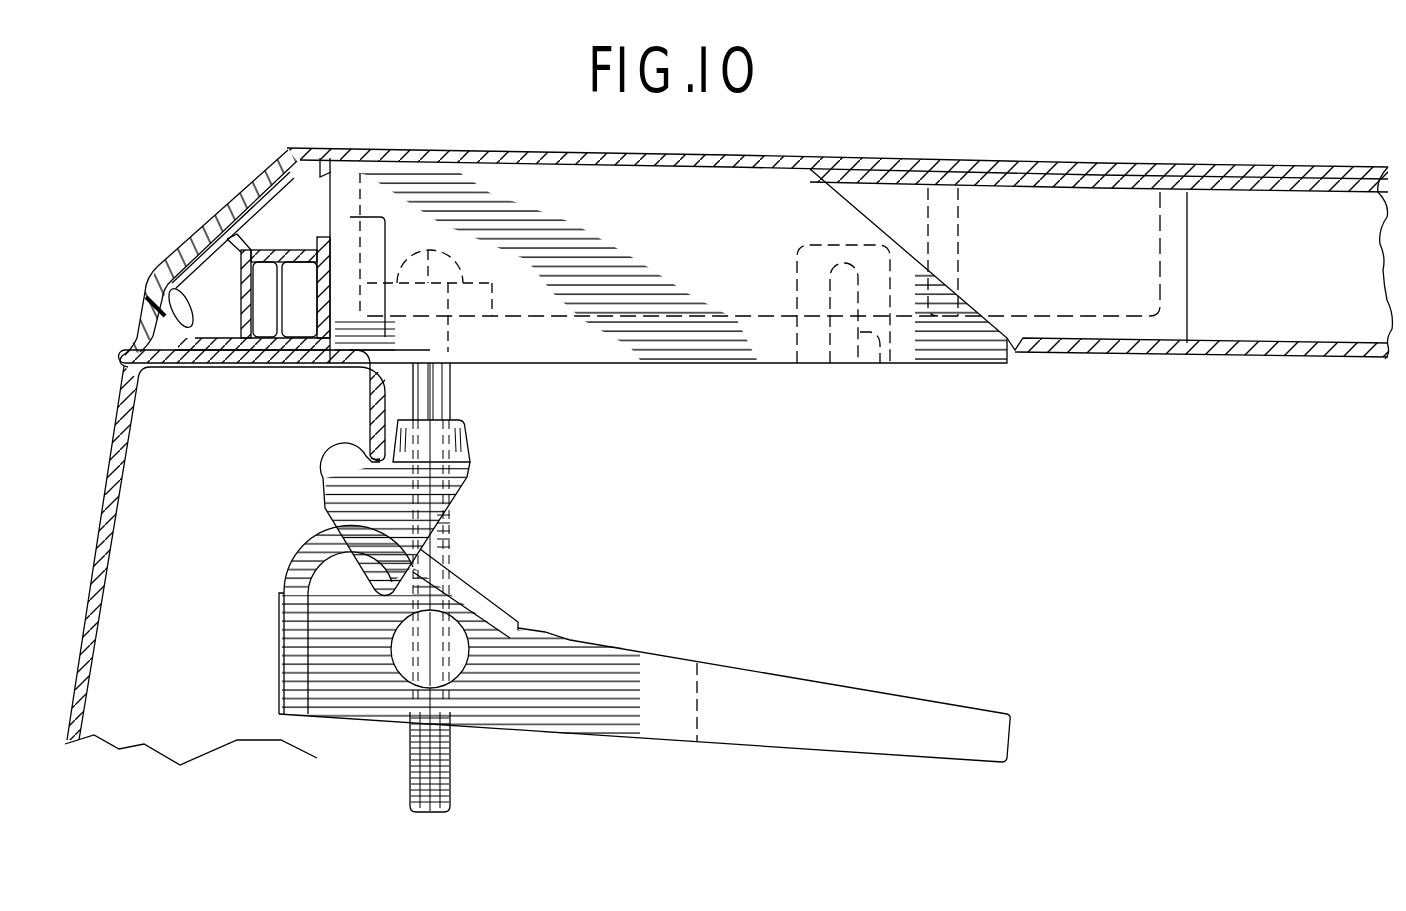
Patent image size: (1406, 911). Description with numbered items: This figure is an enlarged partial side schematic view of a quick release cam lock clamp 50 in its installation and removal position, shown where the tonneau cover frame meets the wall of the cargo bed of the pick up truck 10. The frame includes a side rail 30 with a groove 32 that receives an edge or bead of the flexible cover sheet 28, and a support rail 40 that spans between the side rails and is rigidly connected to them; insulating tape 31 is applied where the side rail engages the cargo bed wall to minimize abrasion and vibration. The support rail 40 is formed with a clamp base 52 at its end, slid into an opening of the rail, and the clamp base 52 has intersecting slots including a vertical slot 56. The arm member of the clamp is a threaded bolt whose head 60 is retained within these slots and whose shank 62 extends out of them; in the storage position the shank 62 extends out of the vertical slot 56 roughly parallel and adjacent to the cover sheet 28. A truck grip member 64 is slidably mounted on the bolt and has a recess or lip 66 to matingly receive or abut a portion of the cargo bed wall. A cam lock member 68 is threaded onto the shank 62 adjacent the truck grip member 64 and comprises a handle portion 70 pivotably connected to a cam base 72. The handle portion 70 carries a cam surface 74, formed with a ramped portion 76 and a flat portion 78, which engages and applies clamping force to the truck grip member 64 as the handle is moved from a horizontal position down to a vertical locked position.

The pick up truck 10 is at (108, 487).
The sheet 28 is at (1013, 160).
The side rail 30 is at (284, 147).
The insulating tape 31 is at (227, 366).
The groove 32 is at (207, 267).
The support rail 40 is at (1243, 353).
The cam lock clamp 50 is at (670, 483).
The clamp base 52 is at (773, 366).
The vertical slot 56 is at (877, 368).
The head 60 is at (458, 255).
The shank 62 is at (452, 380).
The truck grip member 64 is at (470, 492).
The recess or lip 66 is at (324, 482).
The cam lock member 68 is at (563, 607).
The handle portion 70 is at (784, 686).
The cam base 72 is at (463, 672).
The cam surface 74 is at (290, 582).
The ramped portion 76 is at (489, 600).
The flat portion 78 is at (291, 679).